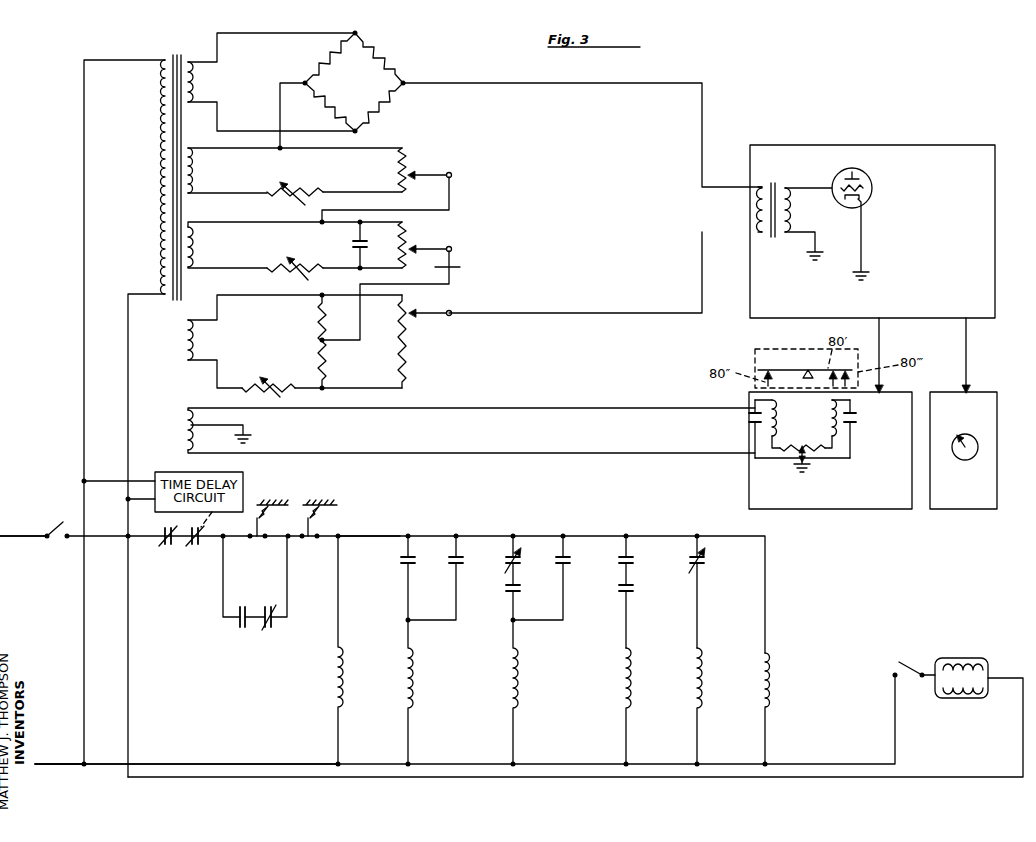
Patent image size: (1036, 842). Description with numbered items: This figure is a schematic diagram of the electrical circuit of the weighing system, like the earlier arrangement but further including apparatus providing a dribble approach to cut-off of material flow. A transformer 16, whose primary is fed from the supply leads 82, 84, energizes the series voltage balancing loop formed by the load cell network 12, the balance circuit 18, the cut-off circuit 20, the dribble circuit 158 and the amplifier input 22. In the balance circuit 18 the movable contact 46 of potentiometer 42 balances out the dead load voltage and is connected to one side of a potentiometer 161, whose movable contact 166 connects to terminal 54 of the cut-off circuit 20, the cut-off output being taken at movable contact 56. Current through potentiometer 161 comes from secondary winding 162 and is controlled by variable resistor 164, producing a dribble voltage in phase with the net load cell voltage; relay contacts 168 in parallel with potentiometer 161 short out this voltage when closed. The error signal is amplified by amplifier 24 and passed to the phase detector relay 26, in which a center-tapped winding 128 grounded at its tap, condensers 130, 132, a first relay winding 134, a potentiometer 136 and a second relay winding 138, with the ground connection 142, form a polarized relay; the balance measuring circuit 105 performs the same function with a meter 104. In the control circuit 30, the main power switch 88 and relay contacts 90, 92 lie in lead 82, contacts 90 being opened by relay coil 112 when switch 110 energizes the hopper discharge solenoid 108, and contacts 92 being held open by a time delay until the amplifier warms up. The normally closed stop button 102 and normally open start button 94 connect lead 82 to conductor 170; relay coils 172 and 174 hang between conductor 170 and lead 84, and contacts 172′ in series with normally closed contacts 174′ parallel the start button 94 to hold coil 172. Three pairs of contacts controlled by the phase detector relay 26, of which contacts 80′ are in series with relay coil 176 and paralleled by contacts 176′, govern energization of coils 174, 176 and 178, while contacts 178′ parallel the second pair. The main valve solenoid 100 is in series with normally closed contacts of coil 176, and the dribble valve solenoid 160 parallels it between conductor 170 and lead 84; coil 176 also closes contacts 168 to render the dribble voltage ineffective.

The load cell network 12 is at (363, 83).
The transformer 16 is at (172, 56).
The balance circuit 18 is at (355, 177).
The cut-off circuit 20 is at (280, 330).
The amplifier input 22 is at (768, 182).
The amplifier 24 is at (923, 176).
The phase detector relay circuit 26 is at (882, 510).
The control circuit 30 is at (245, 724).
The potentiometer 42 is at (411, 156).
The movable contact 46 is at (430, 175).
The terminal 54 is at (318, 340).
The movable contact 56 is at (420, 321).
The relay contacts 80′ is at (405, 566).
The supply lead 82 is at (10, 533).
The supply lead 84 is at (46, 762).
The main power switch 88 is at (56, 522).
The relay contacts 90 is at (165, 545).
The relay contacts 92 is at (196, 547).
The push button start switch 94 is at (256, 543).
The solenoid winding 100 is at (702, 690).
The push button stop switch 102 is at (308, 543).
The meter 104 is at (978, 437).
The balance measuring circuit 105 is at (972, 508).
The solenoid 108 is at (970, 660).
The switch 110 is at (905, 662).
The relay coil 112 is at (968, 700).
The center-tapped transformer winding 128 is at (248, 433).
The condenser 130 is at (752, 420).
The condenser 132 is at (853, 421).
The first relay winding 134 is at (779, 422).
The potentiometer 136 is at (802, 438).
The second relay winding 138 is at (826, 423).
The ground connection 142 is at (808, 460).
The dribble circuit 158 is at (430, 267).
The solenoid winding 160 is at (779, 668).
The potentiometer 161 is at (413, 244).
The secondary winding 162 is at (198, 248).
The variable resistor 164 is at (290, 259).
The movable contact 166 is at (452, 248).
The relay contacts 168 is at (352, 246).
The conductor 170 is at (372, 535).
The relay coil 172 is at (335, 693).
The relay contacts 172′ is at (240, 628).
The relay coil 174 is at (628, 688).
The relay contacts 174′ is at (268, 631).
The relay coil 176 is at (425, 666).
The relay contacts 176′ is at (452, 566).
The relay coil 178 is at (515, 689).
The relay contacts 178′ is at (560, 566).